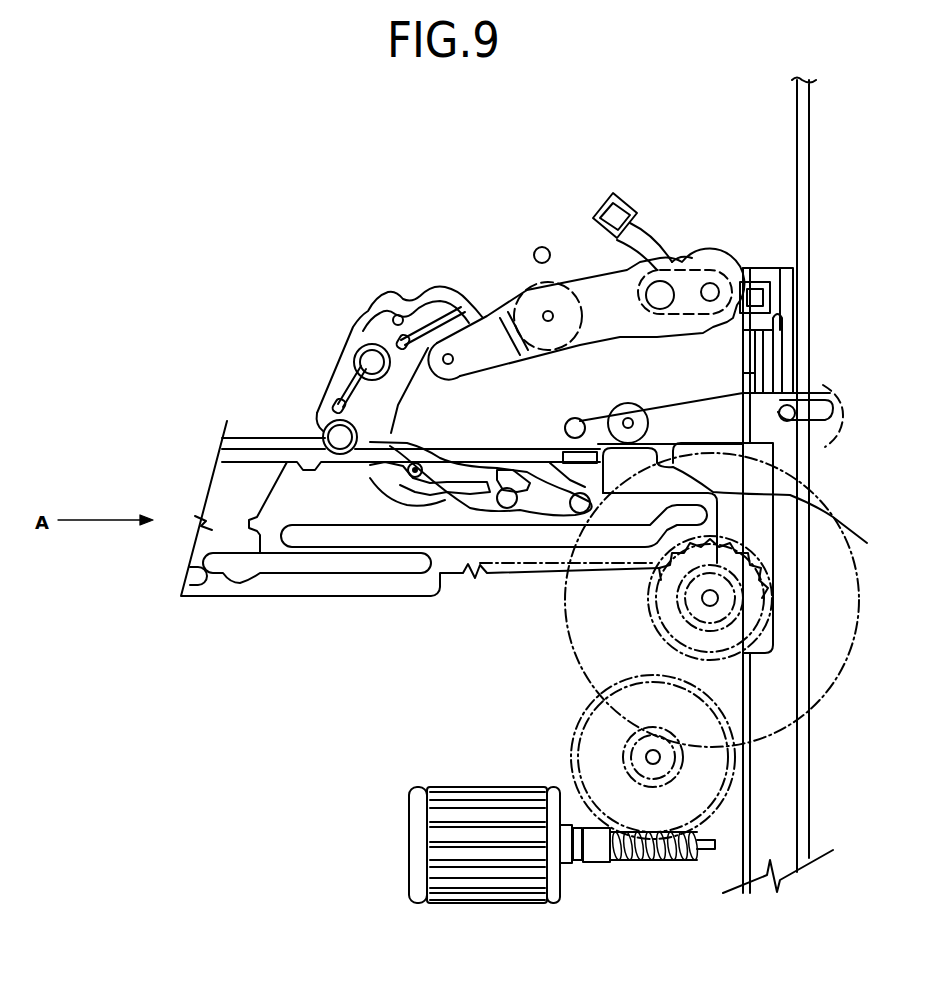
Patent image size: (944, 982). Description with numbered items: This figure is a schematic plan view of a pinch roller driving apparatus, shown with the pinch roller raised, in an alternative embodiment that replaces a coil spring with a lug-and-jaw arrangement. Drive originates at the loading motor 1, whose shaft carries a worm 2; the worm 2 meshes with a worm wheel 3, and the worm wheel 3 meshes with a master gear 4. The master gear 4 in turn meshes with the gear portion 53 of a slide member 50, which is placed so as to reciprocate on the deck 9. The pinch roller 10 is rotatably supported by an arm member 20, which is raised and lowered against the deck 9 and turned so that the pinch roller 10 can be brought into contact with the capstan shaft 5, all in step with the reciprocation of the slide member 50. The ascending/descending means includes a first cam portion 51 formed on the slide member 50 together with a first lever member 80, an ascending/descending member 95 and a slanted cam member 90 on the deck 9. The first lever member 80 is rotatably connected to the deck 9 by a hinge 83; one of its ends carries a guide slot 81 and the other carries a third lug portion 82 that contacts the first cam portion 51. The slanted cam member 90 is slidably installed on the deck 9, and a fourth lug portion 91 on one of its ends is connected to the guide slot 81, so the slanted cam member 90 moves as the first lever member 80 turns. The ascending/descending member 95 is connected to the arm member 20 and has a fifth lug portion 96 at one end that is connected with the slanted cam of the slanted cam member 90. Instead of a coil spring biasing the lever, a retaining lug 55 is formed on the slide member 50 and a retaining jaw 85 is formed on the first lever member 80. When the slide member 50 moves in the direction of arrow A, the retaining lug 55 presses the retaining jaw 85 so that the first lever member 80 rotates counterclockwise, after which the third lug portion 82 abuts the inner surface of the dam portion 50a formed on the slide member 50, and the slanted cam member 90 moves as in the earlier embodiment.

The loading motor 1 is at (478, 903).
The worm 2 is at (654, 851).
The worm wheel 3 is at (573, 740).
The master gear 4 is at (814, 692).
The capstan shaft 5 is at (541, 247).
The deck 9 is at (817, 861).
The pinch roller 10 is at (540, 289).
The arm member 20 is at (674, 262).
The slide member 50 is at (213, 596).
The dam portion 50a is at (441, 446).
The first cam portion 51 is at (513, 438).
The gear portion 53 is at (488, 582).
The retaining lug 55 is at (533, 478).
The first lever member 80 is at (680, 395).
The guide slot 81 is at (813, 427).
The third lug portion 82 is at (575, 418).
The hinge 83 is at (628, 403).
The retaining jaw 85 is at (747, 580).
The slanted cam member 90 is at (797, 306).
The fourth lug portion 91 is at (799, 384).
The ascending/descending member 95 is at (697, 280).
The fifth lug portion 96 is at (772, 286).